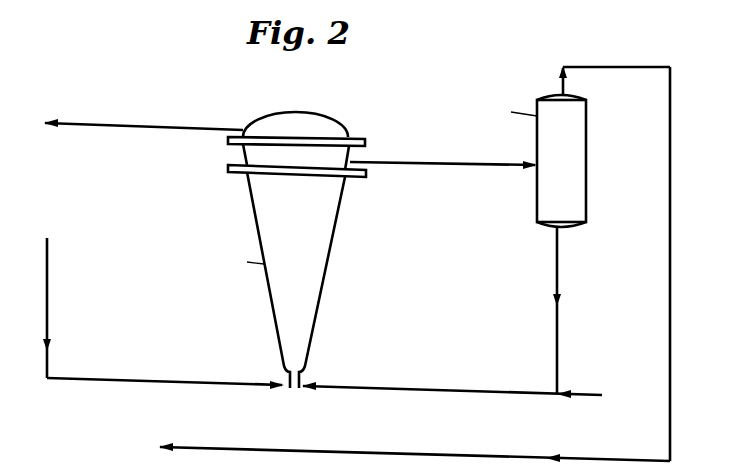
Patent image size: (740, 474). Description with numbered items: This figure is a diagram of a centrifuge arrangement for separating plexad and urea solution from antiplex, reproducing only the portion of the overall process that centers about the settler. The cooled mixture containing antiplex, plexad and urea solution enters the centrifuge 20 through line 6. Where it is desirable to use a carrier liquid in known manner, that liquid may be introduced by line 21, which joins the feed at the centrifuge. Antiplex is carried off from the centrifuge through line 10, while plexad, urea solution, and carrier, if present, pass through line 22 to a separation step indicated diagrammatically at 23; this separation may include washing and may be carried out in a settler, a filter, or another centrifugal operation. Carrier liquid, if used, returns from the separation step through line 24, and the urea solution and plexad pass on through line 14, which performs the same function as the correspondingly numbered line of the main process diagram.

The line 6 is at (160, 380).
The line 10 is at (155, 111).
The line 14 is at (470, 439).
The centrifuge 20 is at (245, 250).
The line 21 is at (421, 367).
The line 22 is at (450, 167).
The separation step 23 is at (490, 145).
The line 24 is at (558, 331).